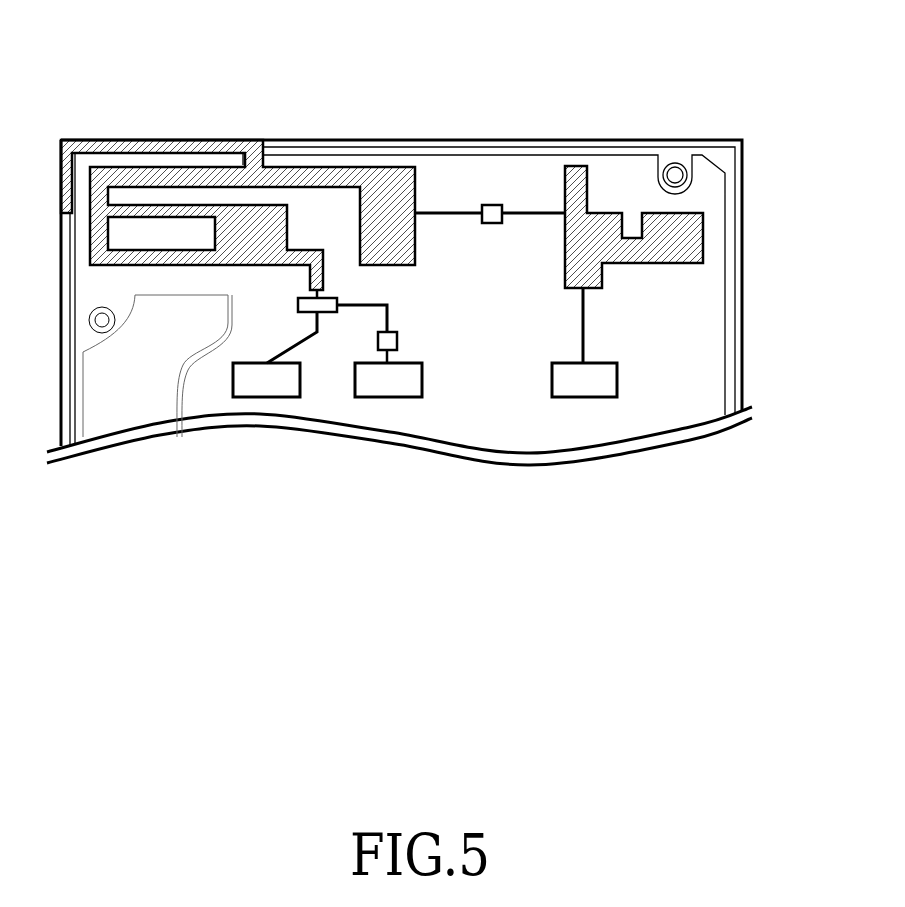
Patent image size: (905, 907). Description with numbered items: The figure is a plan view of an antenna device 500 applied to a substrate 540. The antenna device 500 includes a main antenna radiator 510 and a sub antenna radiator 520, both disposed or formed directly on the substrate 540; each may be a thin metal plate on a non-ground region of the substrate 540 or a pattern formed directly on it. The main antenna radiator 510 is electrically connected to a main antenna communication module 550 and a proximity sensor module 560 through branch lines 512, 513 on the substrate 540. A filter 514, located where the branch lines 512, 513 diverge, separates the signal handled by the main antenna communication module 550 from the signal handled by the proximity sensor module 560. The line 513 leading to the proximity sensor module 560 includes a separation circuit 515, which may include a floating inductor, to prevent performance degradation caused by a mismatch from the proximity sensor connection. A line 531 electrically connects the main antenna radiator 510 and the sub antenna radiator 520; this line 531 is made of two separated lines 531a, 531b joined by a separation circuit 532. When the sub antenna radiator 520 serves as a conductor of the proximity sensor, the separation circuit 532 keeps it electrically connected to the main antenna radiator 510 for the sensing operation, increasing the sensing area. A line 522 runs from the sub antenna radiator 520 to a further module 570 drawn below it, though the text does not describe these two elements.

The antenna device 500 is at (521, 82).
The main antenna radiator 510 is at (390, 180).
The branch line 512 is at (307, 335).
The line 513 is at (392, 318).
The filter 514 is at (322, 314).
The separation circuit 515 is at (377, 342).
The sub antenna radiator 520 is at (683, 237).
The feed line 522 is at (585, 323).
The line 531 is at (490, 171).
The separated line 531a is at (433, 216).
The separated line 531b is at (512, 216).
The separation circuit 532 is at (497, 207).
The substrate 540 is at (612, 154).
The main antenna communication module 550 is at (232, 385).
The proximity sensor module 560 is at (383, 390).
The third circuit 570 is at (580, 397).